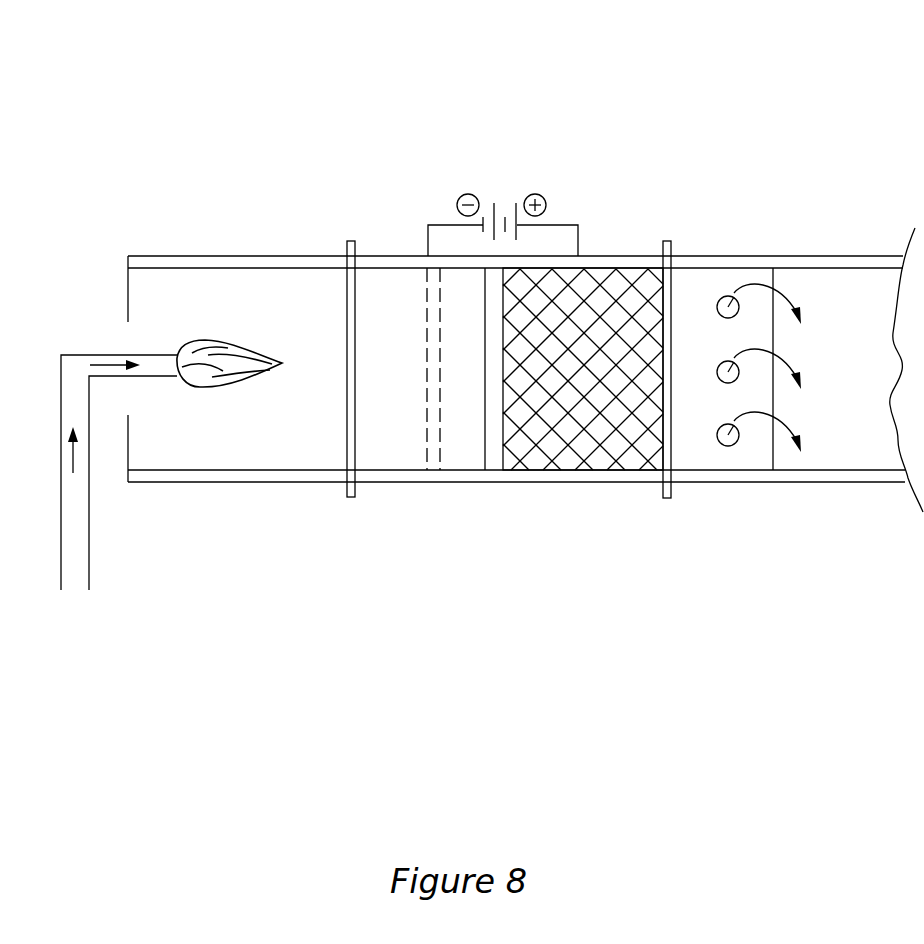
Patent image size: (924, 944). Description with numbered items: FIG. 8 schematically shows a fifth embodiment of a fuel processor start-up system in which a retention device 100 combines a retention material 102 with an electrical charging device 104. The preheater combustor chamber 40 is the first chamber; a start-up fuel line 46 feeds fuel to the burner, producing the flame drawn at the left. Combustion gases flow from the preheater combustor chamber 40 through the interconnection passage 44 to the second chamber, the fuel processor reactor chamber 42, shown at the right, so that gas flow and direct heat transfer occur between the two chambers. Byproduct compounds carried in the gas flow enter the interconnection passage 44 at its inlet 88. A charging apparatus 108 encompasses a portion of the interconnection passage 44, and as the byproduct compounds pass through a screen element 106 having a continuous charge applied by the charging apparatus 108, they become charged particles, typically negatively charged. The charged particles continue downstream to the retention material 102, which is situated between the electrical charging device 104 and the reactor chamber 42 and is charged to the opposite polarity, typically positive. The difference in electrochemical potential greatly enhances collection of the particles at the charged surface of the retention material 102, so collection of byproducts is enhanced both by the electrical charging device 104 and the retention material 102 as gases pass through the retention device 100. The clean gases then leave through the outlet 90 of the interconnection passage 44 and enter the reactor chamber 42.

The preheater combustor chamber 40 is at (247, 238).
The fuel processor reactor chamber 42 is at (820, 235).
The interconnection passage 44 is at (454, 132).
The start-up fuel line 46 is at (73, 582).
The inlet 88 is at (348, 498).
The outlet 90 is at (666, 498).
The retention device 100 is at (638, 267).
The retention material 102 is at (583, 297).
The electrical charging device 104 is at (396, 282).
The screen element 106 is at (440, 415).
The charging apparatus 108 is at (497, 203).